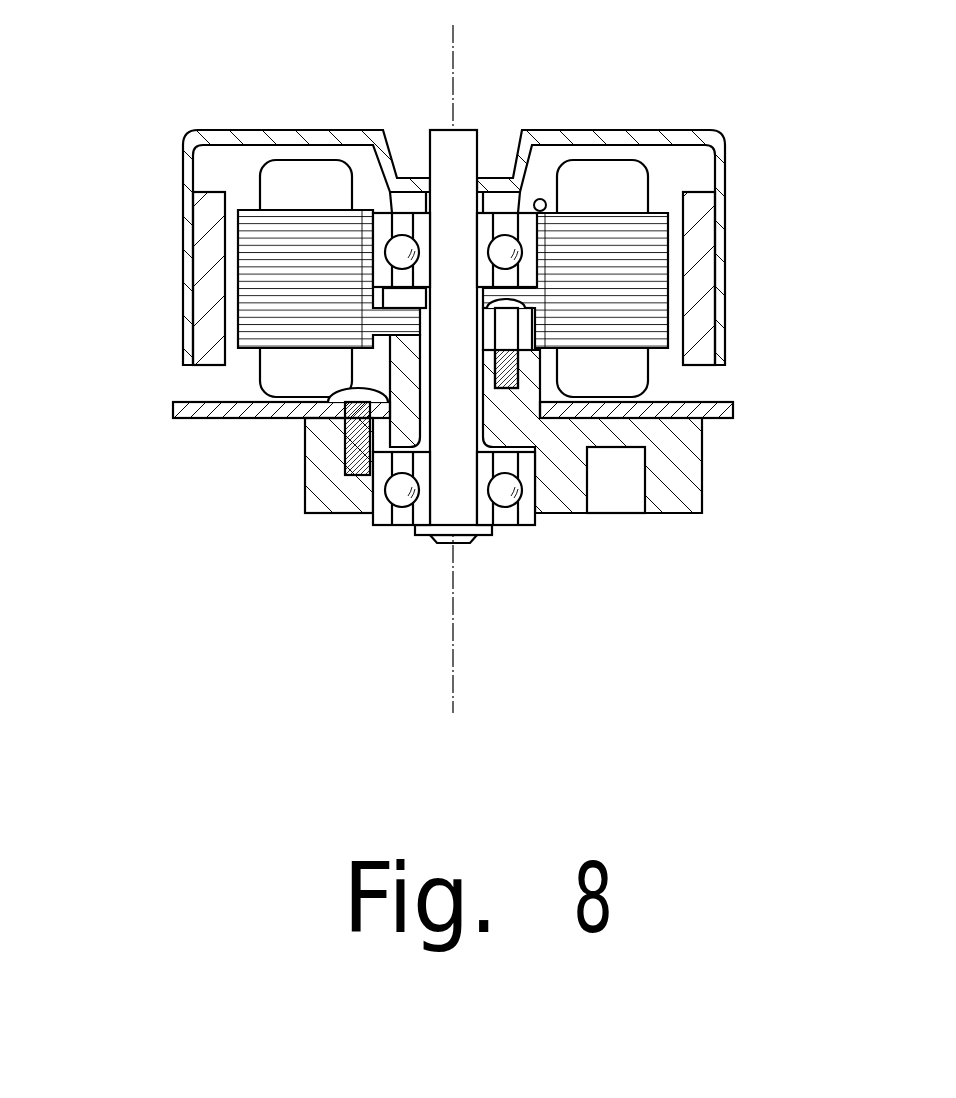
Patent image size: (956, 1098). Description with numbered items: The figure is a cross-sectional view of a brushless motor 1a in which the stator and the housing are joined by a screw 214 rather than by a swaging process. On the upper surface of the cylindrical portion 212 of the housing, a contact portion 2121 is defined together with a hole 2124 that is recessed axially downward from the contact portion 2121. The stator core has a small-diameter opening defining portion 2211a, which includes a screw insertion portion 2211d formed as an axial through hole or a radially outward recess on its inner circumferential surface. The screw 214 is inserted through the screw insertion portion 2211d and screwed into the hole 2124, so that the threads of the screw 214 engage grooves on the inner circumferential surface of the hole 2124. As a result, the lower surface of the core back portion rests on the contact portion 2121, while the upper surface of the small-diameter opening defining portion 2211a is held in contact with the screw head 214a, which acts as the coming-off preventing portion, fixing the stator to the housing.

The brushless motor 1a is at (97, 44).
The cylindrical portion 212 is at (537, 388).
The contact portion 2121 is at (408, 350).
The hole 2124 is at (533, 387).
The screw 214 is at (513, 360).
The screw head 214a is at (503, 300).
The small-diameter opening defining portion 2211a is at (415, 320).
The screw insertion portion 2211d is at (605, 325).